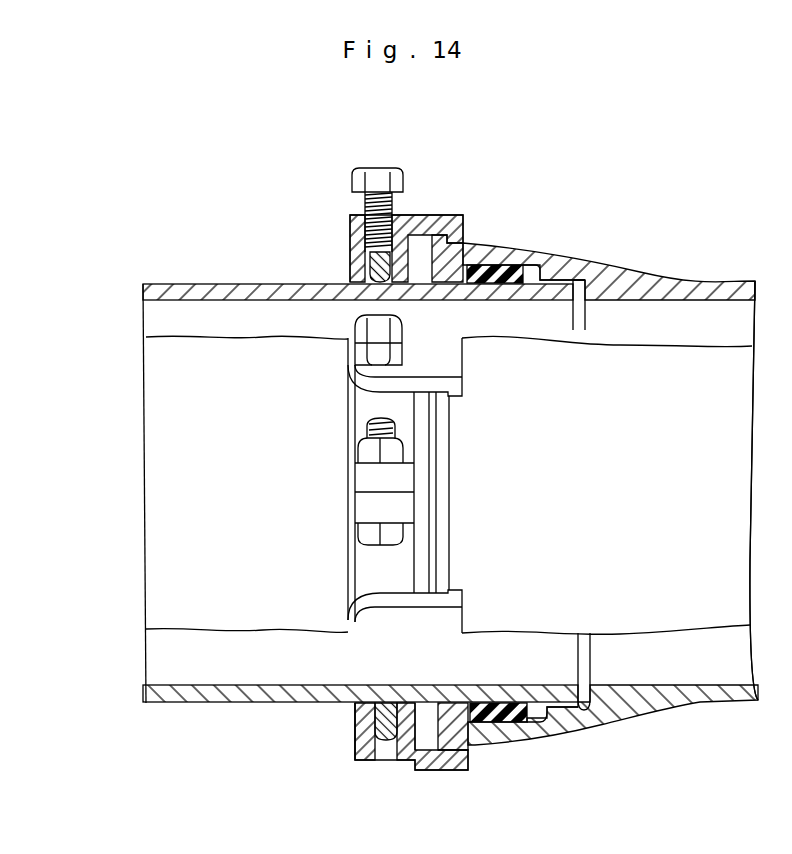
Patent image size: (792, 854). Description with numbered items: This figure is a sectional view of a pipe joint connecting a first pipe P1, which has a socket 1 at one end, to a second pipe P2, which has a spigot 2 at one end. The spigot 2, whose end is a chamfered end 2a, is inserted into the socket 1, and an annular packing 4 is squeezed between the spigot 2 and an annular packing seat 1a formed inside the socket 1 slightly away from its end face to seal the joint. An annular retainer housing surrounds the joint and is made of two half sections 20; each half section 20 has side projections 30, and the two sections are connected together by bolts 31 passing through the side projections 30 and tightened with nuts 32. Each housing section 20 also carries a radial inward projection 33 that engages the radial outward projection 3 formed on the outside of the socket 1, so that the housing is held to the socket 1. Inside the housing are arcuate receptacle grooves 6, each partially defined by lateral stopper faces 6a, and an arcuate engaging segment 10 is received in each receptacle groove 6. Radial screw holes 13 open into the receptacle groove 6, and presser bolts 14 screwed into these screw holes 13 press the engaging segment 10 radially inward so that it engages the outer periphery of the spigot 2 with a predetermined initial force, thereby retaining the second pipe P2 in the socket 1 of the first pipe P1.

The socket 1 is at (578, 258).
The annular packing seat 1a is at (518, 263).
The spigot 2 is at (542, 292).
The chamfered end 2a is at (582, 280).
The radial outward projection 3 is at (440, 235).
The annular packing 4 is at (483, 282).
The receptacle groove 6 is at (397, 745).
The lateral stopper face 6a is at (357, 721).
The engaging segment 10 is at (356, 262).
The screw hole 13 is at (388, 222).
The presser bolt 14 is at (377, 172).
The housing half section 20 is at (352, 220).
The side projection 30 is at (357, 472).
The bolt 31 is at (392, 535).
The nut 32 is at (393, 453).
The radial inward projection 33 is at (473, 243).
The first pipe P1 is at (713, 297).
The second pipe P2 is at (160, 298).